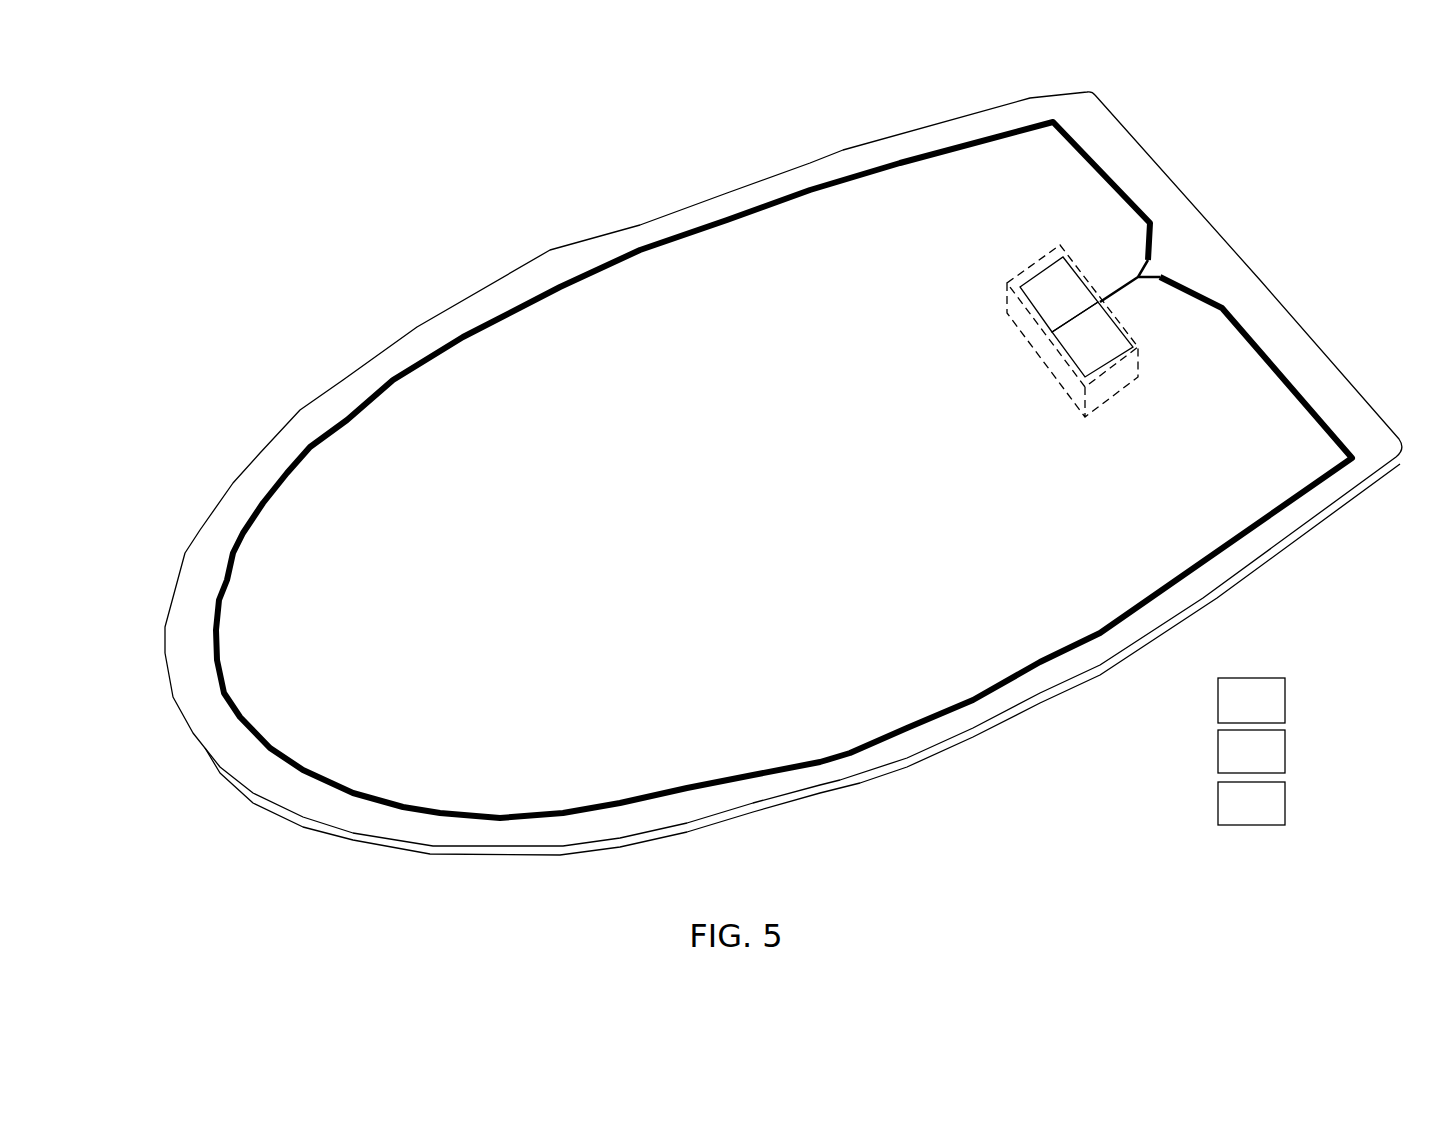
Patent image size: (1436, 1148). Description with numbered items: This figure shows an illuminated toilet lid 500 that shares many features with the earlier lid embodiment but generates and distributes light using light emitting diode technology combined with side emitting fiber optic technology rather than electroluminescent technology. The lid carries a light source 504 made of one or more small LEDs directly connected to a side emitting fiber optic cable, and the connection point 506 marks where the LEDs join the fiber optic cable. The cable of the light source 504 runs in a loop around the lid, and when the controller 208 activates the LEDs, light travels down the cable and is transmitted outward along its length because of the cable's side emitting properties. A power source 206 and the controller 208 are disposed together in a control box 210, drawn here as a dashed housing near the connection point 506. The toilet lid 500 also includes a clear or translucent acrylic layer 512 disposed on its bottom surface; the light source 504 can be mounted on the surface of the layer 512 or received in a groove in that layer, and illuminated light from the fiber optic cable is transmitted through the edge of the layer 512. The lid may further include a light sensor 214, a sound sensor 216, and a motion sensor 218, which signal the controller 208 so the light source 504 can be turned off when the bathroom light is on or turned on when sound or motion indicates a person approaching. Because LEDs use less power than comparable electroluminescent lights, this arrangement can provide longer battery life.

The toilet lid 500 is at (783, 453).
The layer 512 is at (822, 168).
The light source 504 is at (615, 257).
The connection point 506 is at (1153, 257).
The power source 206 is at (1072, 305).
The controller 208 is at (1110, 354).
The control box 210 is at (1030, 343).
The light sensor 214 is at (1233, 714).
The sound sensor 216 is at (1233, 764).
The motion sensor 218 is at (1233, 816).